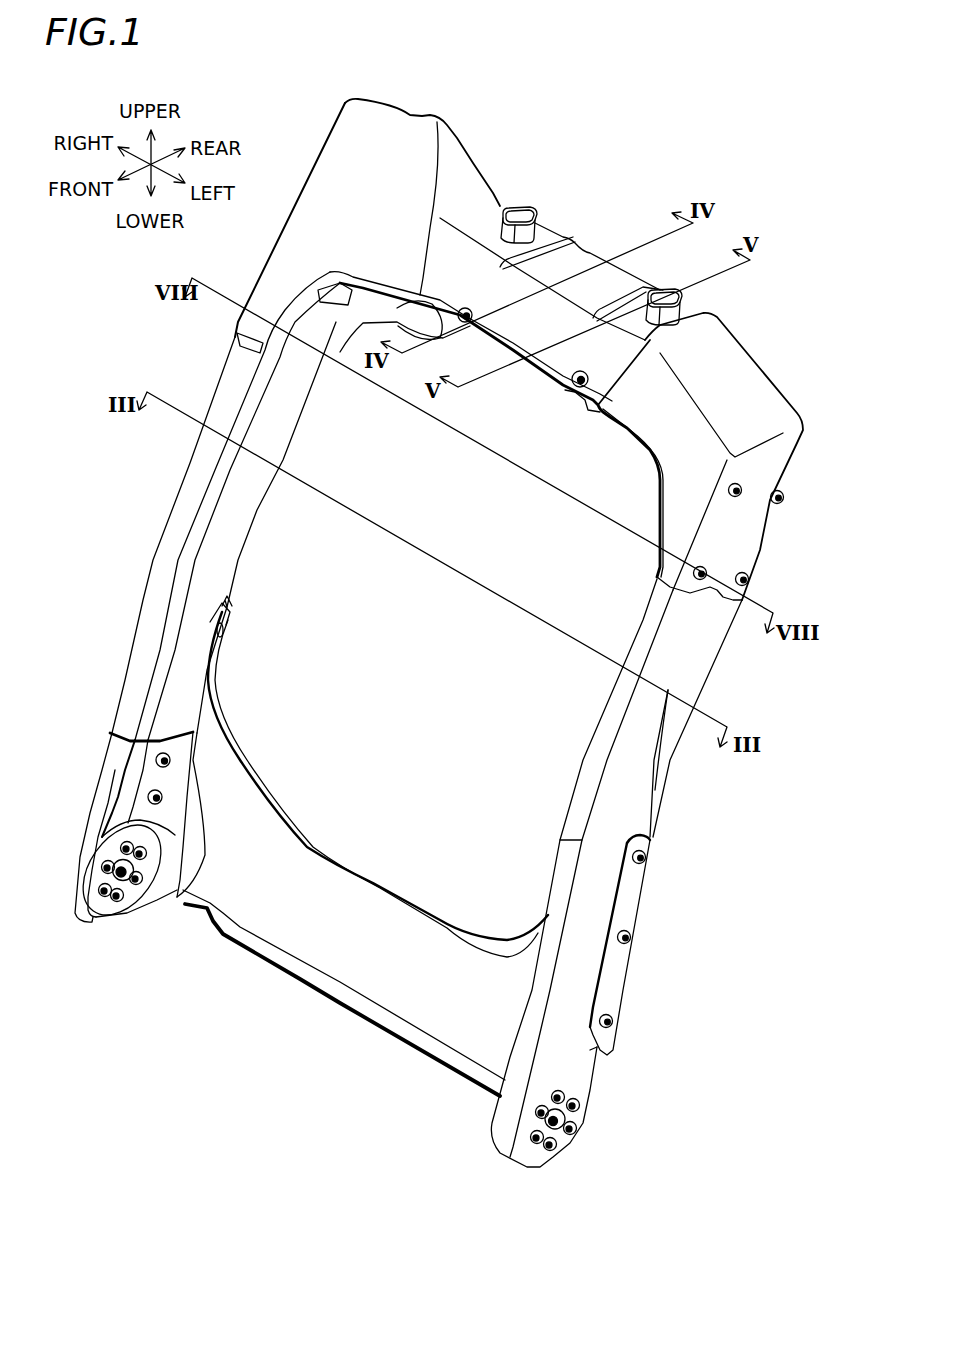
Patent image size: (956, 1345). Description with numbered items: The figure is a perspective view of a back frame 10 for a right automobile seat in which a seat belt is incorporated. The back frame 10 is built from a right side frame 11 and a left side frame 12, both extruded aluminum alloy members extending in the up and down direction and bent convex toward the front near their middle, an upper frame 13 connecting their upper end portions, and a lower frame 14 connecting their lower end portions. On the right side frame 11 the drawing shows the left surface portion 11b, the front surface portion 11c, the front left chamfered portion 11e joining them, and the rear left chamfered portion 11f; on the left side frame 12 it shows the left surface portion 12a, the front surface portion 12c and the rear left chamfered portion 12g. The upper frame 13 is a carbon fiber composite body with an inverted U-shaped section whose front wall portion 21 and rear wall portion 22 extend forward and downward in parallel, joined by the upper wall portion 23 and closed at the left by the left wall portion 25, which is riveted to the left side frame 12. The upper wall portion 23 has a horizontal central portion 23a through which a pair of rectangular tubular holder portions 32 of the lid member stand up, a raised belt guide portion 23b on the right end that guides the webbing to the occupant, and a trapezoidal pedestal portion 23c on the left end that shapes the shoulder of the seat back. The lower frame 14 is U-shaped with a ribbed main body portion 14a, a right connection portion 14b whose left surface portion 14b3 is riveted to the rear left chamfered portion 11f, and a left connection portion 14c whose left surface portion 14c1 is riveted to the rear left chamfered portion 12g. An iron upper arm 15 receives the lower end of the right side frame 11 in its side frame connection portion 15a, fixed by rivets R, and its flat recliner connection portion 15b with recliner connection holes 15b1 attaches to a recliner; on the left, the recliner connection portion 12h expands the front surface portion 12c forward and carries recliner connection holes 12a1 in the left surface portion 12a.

The back frame 10 is at (141, 458).
The right side frame 11 is at (165, 528).
The left surface portion 11b is at (225, 548).
The front surface portion 11c is at (165, 565).
The front left chamfered portion 11e is at (205, 513).
The rear left chamfered portion 11f is at (225, 603).
The left side frame 12 is at (672, 773).
The left surface portion 12a is at (617, 812).
The recliner connection holes 12a1 is at (577, 1122).
The front surface portion 12c is at (580, 755).
The rear left chamfered portion 12g is at (650, 793).
The recliner connection portion 12h is at (577, 1068).
The upper frame 13 is at (528, 337).
The lower frame 14 is at (298, 970).
The main body portion 14a is at (352, 867).
The right connection portion 14b is at (298, 634).
The left surface portion 14b3 is at (218, 645).
The left connection portion 14c is at (696, 945).
The left surface portion 14c1 is at (613, 972).
The upper arm 15 is at (98, 803).
The side frame connection portion 15a is at (107, 753).
The recliner connection portion 15b is at (128, 900).
The recliner connection holes 15b1 is at (112, 900).
The front wall portion 21 is at (587, 390).
The rear wall portion 22 is at (360, 308).
The upper wall portion 23 is at (570, 253).
The central portion 23a is at (617, 280).
The belt guide portion 23b is at (387, 112).
The pedestal portion 23c is at (773, 292).
The left wall portion 25 is at (737, 543).
The holder portions 32 is at (517, 203).
The rivets R is at (463, 307).